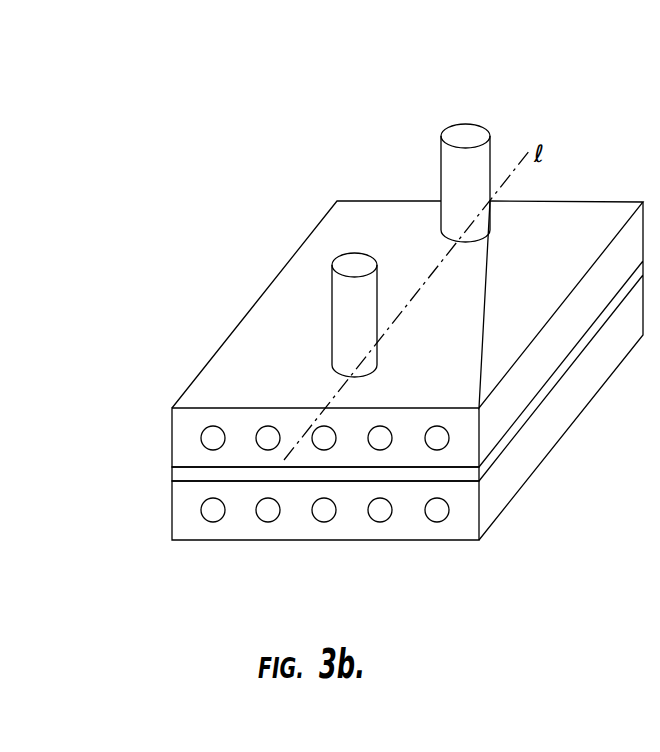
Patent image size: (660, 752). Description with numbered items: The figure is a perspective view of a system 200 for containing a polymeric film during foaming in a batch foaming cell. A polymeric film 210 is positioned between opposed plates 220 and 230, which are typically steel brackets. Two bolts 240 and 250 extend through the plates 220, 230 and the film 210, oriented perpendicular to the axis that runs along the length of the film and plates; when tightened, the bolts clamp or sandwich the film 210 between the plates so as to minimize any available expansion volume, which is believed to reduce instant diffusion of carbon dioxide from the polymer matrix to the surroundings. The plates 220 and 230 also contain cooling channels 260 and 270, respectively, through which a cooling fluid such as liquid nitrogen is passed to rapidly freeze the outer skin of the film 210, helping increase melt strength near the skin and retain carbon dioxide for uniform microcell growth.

The system 200 is at (556, 562).
The polymeric film 210 is at (172, 474).
The opposed plate 220 is at (172, 448).
The opposed plate 230 is at (172, 522).
The bolt 240 is at (352, 252).
The bolt 250 is at (477, 122).
The cooling channels 260 is at (210, 425).
The cooling channels 270 is at (217, 516).